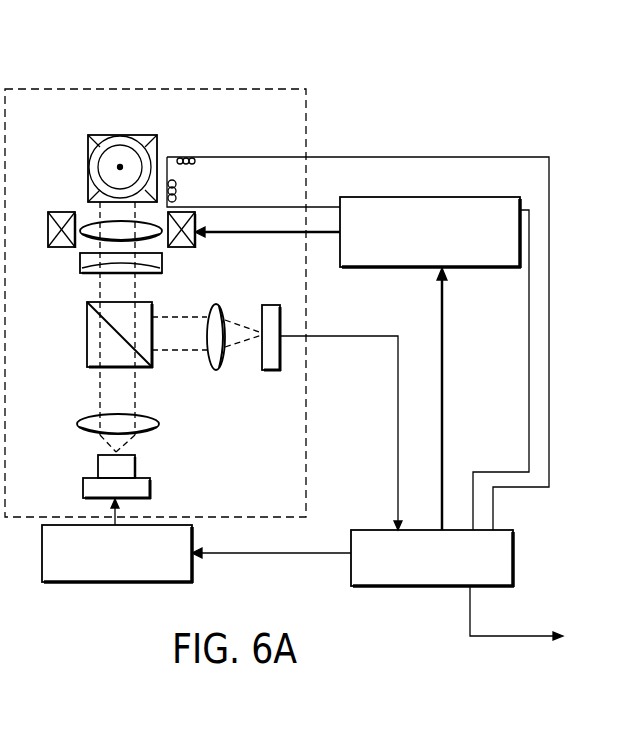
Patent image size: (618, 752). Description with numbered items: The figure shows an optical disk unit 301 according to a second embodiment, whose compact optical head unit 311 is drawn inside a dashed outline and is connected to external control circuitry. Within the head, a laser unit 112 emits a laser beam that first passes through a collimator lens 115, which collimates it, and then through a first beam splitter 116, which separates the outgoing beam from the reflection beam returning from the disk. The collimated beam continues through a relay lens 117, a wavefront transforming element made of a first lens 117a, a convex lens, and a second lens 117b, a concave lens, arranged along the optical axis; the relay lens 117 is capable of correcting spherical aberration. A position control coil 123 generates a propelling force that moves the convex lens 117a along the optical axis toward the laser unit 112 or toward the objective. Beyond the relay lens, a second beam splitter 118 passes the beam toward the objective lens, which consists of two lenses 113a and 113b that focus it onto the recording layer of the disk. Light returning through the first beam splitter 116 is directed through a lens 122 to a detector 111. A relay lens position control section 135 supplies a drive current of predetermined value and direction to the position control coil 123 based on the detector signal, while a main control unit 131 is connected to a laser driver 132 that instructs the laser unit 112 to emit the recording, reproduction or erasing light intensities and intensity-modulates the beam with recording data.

The optical disk unit 301 is at (306, 76).
The optical head unit 311 is at (95, 88).
The lens 113a is at (107, 158).
The lens 113b is at (157, 139).
The second beam splitter 118 is at (88, 192).
The position control coil 123 is at (55, 248).
The relay lens 117 is at (250, 246).
The first lens 117a is at (155, 240).
The second lens 117b is at (165, 266).
The first beam splitter 116 is at (87, 332).
The detection lens 122 is at (216, 372).
The optical head unit 111 is at (270, 372).
The collimator lens 115 is at (78, 424).
The laser unit 112 is at (83, 485).
The relay lens position control section 135 is at (378, 268).
The main control unit 131 is at (513, 560).
The laser driver 132 is at (192, 575).